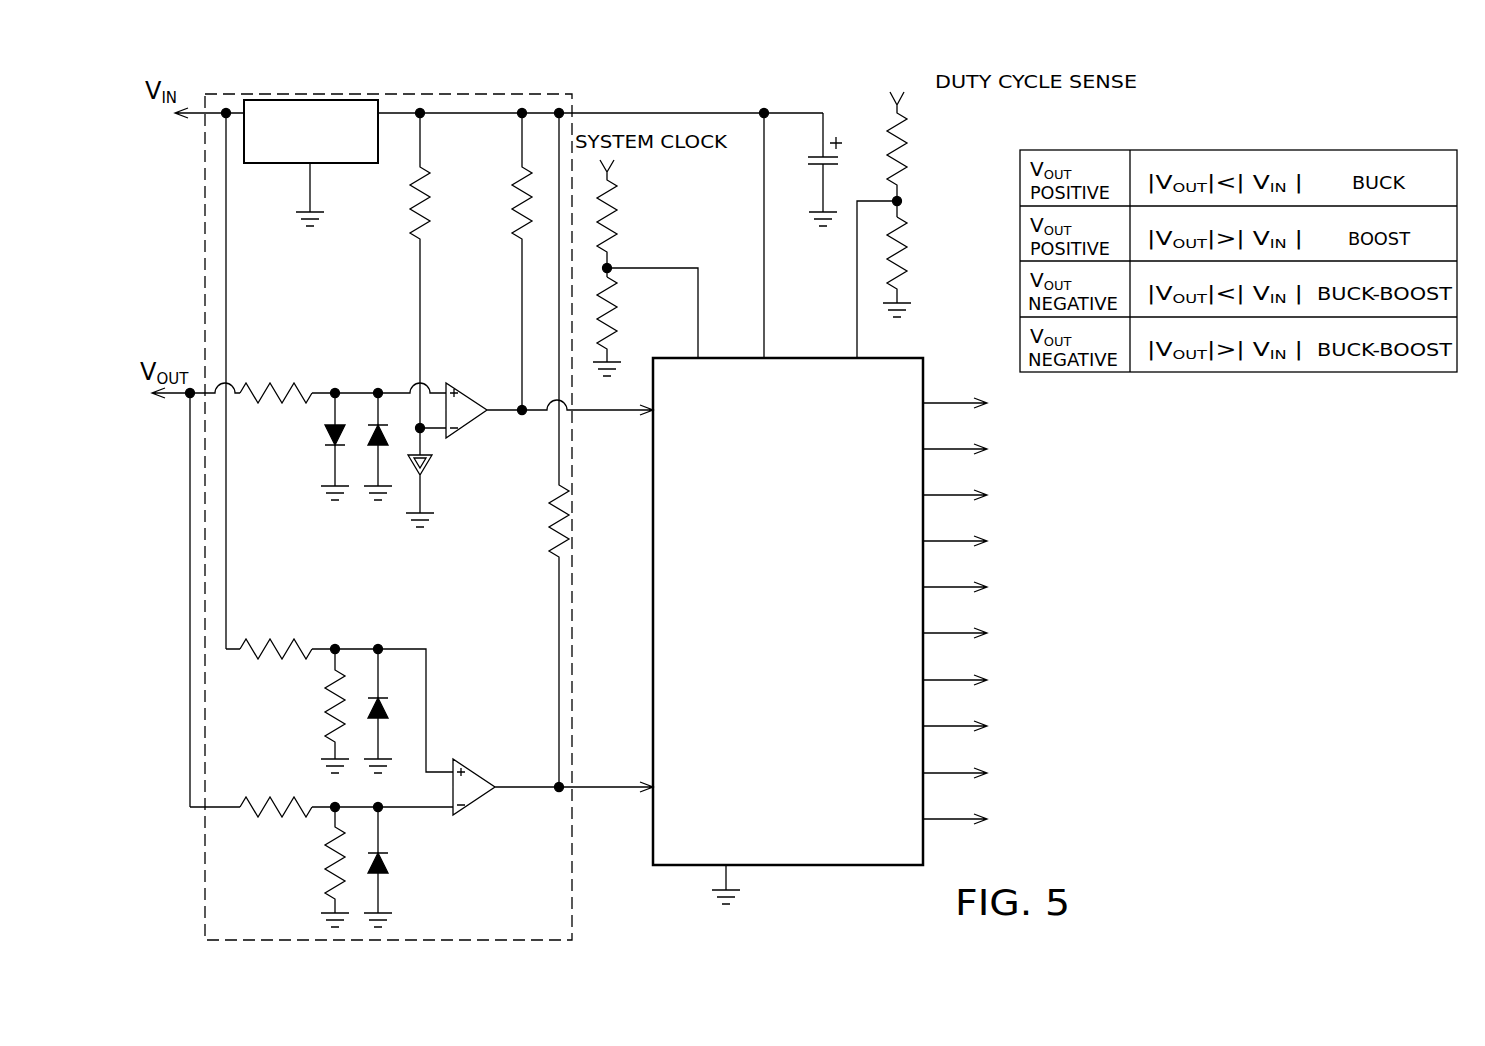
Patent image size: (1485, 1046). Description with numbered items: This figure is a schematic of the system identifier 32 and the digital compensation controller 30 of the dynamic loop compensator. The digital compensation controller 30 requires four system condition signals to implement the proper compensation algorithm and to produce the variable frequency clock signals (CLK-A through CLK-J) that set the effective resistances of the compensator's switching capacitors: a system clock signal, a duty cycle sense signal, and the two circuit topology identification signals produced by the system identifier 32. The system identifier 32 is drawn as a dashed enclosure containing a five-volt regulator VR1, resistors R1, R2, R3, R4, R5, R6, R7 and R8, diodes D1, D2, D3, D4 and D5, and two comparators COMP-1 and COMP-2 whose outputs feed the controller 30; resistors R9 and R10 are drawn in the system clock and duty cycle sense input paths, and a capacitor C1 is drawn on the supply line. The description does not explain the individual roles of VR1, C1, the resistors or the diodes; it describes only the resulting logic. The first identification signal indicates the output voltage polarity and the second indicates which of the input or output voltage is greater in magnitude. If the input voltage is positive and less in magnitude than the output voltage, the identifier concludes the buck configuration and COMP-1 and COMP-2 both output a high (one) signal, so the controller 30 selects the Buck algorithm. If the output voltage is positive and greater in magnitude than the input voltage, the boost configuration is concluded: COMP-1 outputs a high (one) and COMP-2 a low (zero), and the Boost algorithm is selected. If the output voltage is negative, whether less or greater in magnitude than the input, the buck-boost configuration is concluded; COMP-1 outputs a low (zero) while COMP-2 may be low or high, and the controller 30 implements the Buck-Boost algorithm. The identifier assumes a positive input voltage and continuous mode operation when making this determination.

The digital compensation controller 30 is at (850, 866).
The system identifier 32 is at (578, 104).
The +5 volt regulator VR1 is at (246, 163).
The resistor R1 is at (411, 228).
The resistor R2 is at (282, 386).
The resistor R3 is at (250, 643).
The resistor R4 is at (332, 702).
The resistor R5 is at (297, 801).
The resistor R6 is at (330, 858).
The resistor R7 is at (512, 206).
The resistor R8 is at (552, 507).
The resistor R9 is at (617, 140).
The resistor R10 is at (617, 335).
The capacitor C1 is at (813, 160).
The diode D1 is at (428, 468).
The diode D2 is at (328, 448).
The diode D3 is at (372, 448).
The diode D4 is at (382, 697).
The diode D5 is at (382, 852).
The comparator comp-1 COMP-1 is at (478, 424).
The comparator comp-2 COMP-2 is at (485, 801).